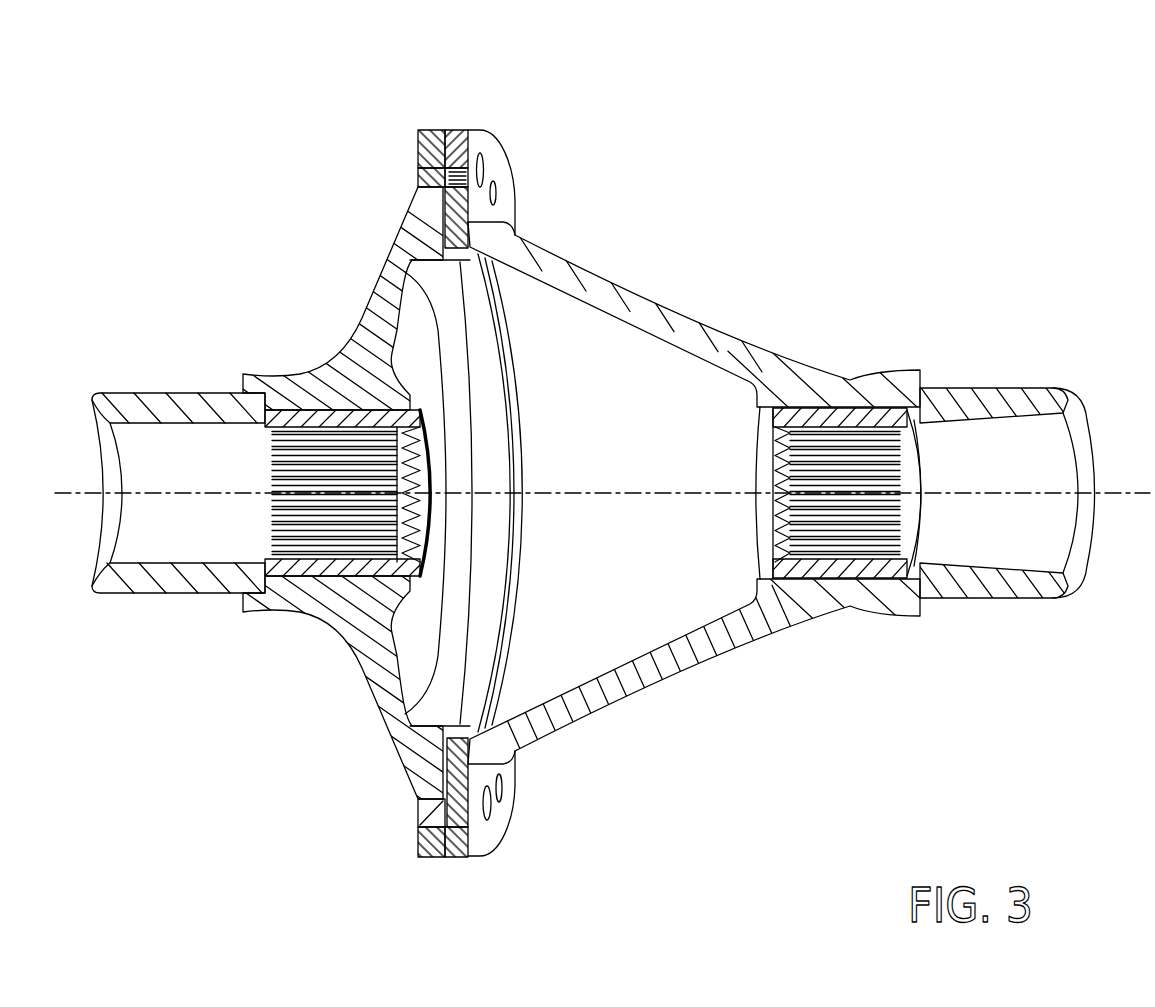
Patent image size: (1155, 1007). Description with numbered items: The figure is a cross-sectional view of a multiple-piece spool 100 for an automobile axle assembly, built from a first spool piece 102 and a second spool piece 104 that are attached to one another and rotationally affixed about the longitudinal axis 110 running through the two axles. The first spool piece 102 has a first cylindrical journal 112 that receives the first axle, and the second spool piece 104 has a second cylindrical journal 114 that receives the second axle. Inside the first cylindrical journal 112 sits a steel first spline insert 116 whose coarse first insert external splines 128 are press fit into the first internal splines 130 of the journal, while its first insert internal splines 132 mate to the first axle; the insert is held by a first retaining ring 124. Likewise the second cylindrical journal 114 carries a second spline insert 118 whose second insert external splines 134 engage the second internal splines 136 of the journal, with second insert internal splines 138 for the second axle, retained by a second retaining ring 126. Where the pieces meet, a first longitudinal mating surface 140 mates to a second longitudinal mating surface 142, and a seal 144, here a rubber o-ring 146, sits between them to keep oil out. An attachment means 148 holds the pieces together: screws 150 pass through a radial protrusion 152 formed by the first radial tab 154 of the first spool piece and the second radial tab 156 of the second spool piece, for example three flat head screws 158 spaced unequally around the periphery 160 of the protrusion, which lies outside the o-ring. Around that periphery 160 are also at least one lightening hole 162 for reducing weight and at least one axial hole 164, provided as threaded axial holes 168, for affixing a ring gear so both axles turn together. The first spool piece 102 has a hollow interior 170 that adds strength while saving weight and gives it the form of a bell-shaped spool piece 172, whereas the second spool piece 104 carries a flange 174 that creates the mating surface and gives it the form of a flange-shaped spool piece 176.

The multiple-piece spool 100 is at (770, 108).
The first spool piece 102 is at (618, 280).
The second spool piece 104 is at (366, 515).
The longitudinal axis 110 is at (1118, 490).
The first cylindrical journal 112 is at (1000, 387).
The second cylindrical journal 114 is at (182, 392).
The first spline insert 116 is at (703, 494).
The second spline insert 118 is at (366, 515).
The first retaining ring 124 is at (703, 494).
The second retaining ring 126 is at (400, 760).
The first insert external splines 128 is at (850, 493).
The first internal splines 130 is at (912, 555).
The first insert internal splines 132 is at (850, 493).
The second insert external splines 134 is at (376, 493).
The second internal splines 136 is at (267, 556).
The second insert internal splines 138 is at (376, 493).
The first longitudinal mating surface 140 is at (494, 493).
The second longitudinal mating surface 142 is at (366, 515).
The seal 144 is at (366, 515).
The rubber o-ring 146 is at (366, 515).
The attachment means 148 is at (389, 490).
The screws 150 is at (389, 490).
The radial protrusion 152 is at (703, 494).
The first radial tab 154 is at (367, 98).
The second radial tab 156 is at (389, 490).
The flat head screws 158 is at (389, 490).
The periphery 160 is at (389, 490).
The lightening hole 162 is at (703, 494).
The axial hole 164 is at (703, 494).
The threaded axial holes 168 is at (543, 158).
The hollow interior 170 is at (703, 494).
The bell-shaped spool piece 172 is at (703, 494).
The flange 174 is at (492, 296).
The flange-shaped spool piece 176 is at (366, 515).